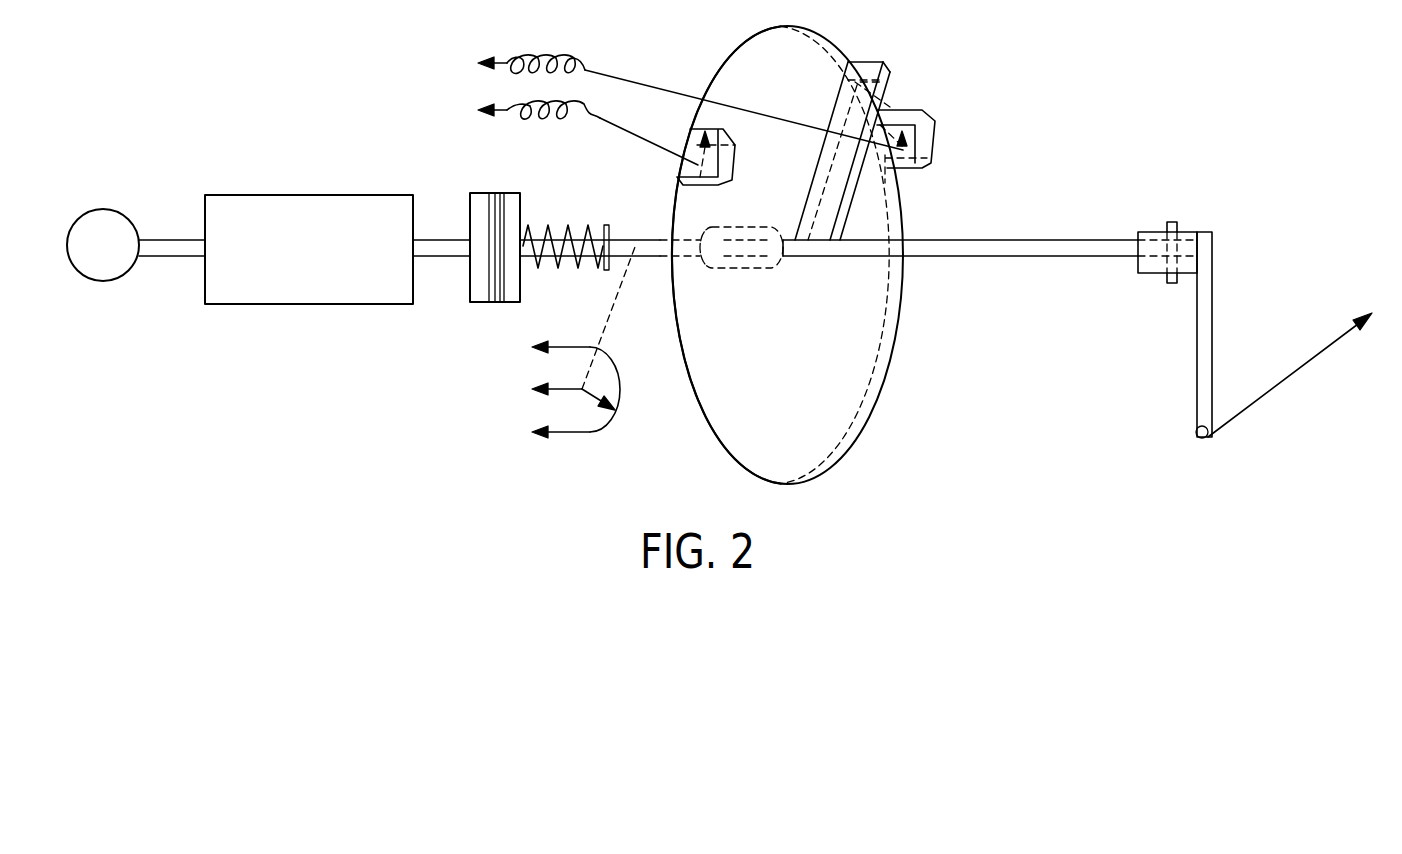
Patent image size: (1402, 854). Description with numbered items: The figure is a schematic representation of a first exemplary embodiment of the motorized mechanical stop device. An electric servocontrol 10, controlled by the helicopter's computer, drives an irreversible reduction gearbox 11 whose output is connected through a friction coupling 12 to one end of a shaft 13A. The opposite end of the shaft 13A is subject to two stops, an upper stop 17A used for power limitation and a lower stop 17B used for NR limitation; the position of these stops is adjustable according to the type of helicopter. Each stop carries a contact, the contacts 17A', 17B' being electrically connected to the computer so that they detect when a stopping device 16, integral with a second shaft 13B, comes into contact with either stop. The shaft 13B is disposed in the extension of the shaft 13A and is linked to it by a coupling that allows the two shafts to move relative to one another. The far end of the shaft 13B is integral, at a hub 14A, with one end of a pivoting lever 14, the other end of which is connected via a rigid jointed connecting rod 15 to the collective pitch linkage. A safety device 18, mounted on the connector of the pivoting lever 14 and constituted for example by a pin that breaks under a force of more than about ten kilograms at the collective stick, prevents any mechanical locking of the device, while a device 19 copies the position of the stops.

The electric servocontrol 10 is at (103, 222).
The irreversible reduction gearbox 11 is at (248, 207).
The friction coupling 12 is at (480, 203).
The shaft 13A is at (648, 238).
The shaft 13B is at (990, 219).
The pivoting lever 14 is at (1205, 295).
The hub 14A is at (1143, 232).
The rigid jointed connecting rod 15 is at (1275, 383).
The stopping device 16 is at (887, 68).
The upper stop 17A is at (937, 146).
The contact 17A' is at (690, 102).
The lower stop 17B is at (705, 107).
The contact 17B' is at (588, 140).
The safety device 18 is at (1178, 222).
The device for copying the position of the stops 19 is at (570, 435).